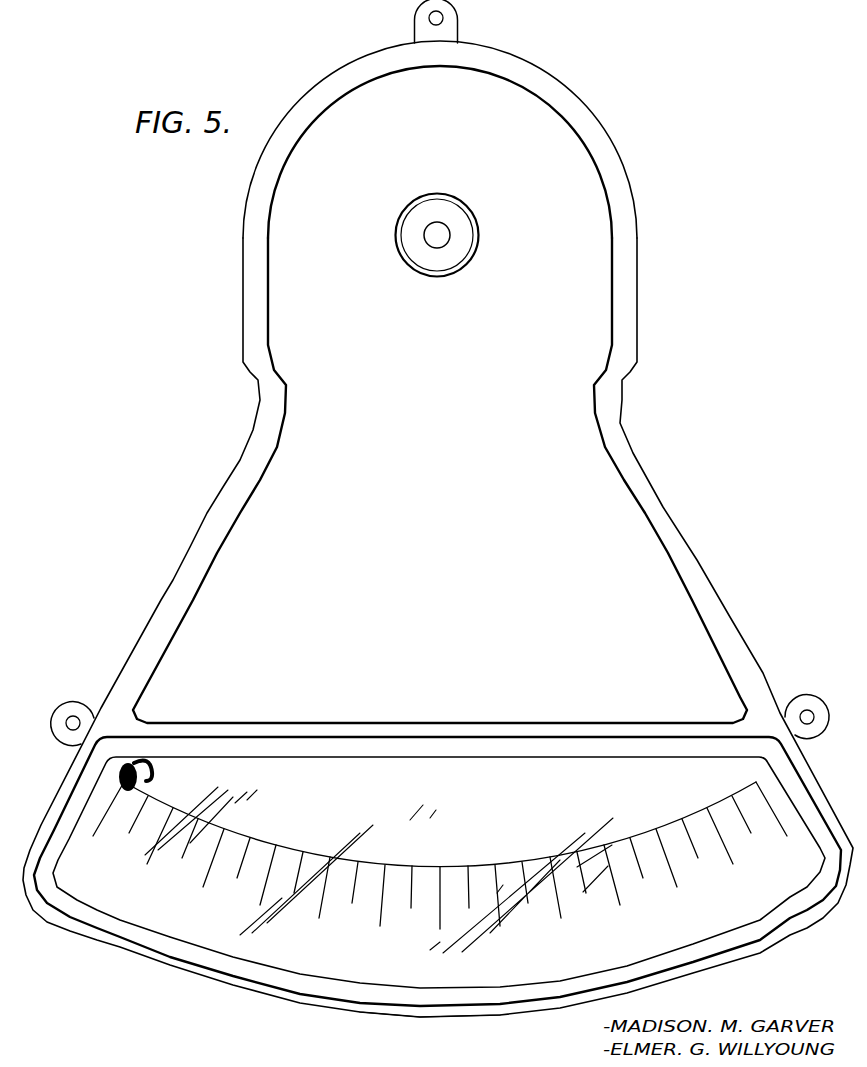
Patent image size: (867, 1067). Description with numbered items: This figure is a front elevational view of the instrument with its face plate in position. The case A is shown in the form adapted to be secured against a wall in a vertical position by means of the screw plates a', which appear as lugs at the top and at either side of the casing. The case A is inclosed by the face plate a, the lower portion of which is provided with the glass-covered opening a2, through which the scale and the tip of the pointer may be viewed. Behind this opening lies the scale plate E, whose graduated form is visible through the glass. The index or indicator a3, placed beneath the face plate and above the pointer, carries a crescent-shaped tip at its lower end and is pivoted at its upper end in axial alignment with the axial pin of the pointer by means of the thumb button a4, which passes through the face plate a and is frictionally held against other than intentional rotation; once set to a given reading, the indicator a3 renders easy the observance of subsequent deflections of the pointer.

The case A is at (639, 421).
The face plate a is at (440, 394).
The screw plates a' is at (440, 373).
The glass-covered opening a2 is at (439, 872).
The index or indicator a3 is at (138, 785).
The thumb button a4 is at (479, 233).
The scale plate E is at (433, 968).